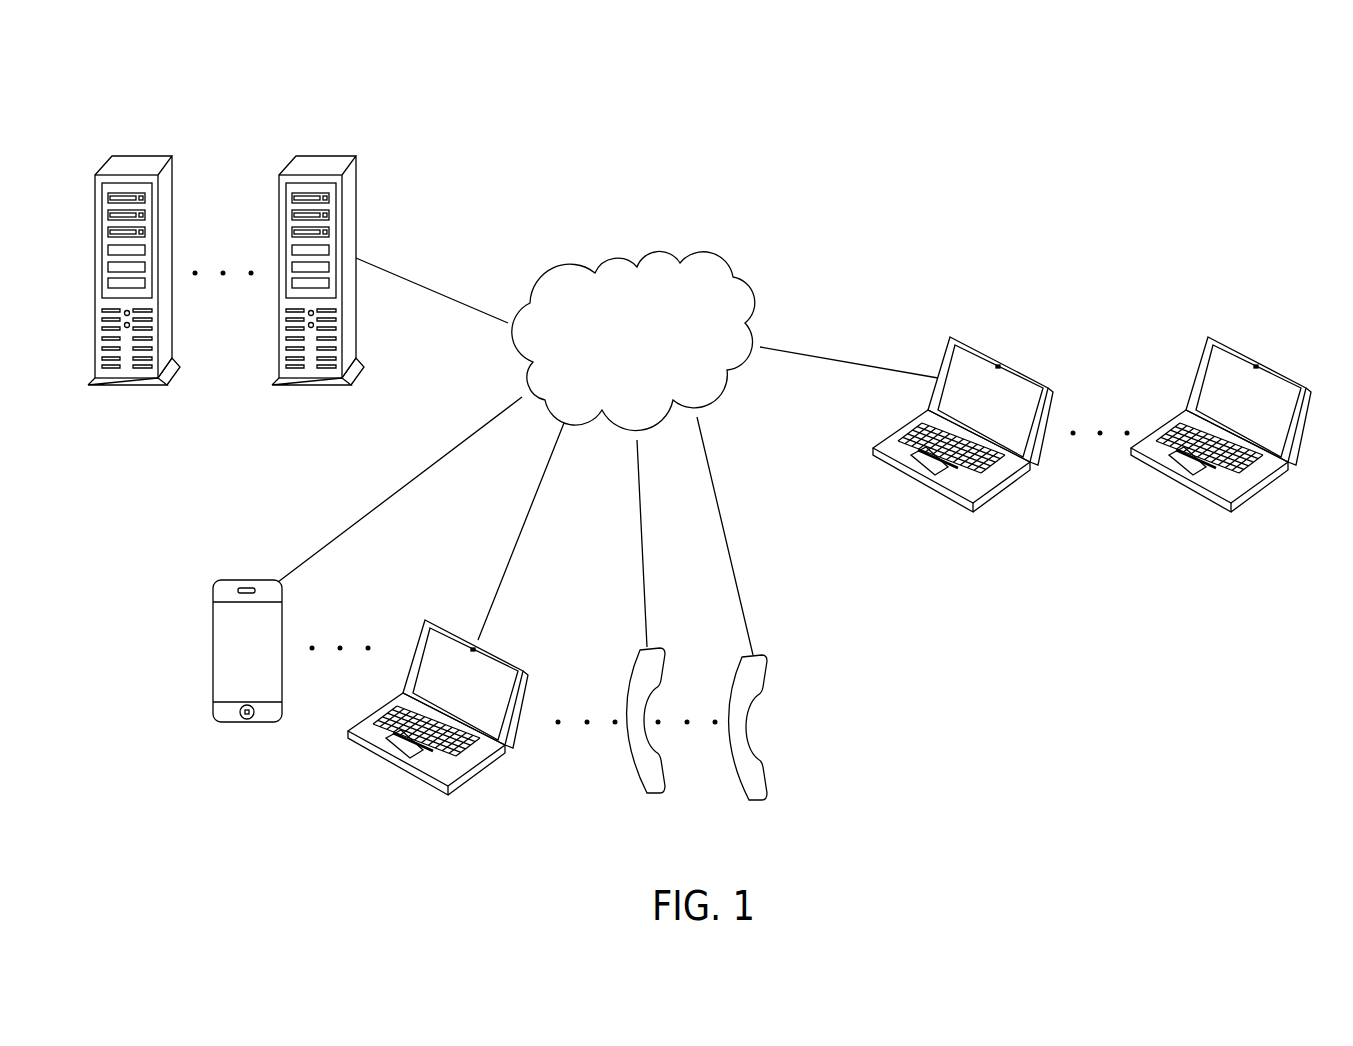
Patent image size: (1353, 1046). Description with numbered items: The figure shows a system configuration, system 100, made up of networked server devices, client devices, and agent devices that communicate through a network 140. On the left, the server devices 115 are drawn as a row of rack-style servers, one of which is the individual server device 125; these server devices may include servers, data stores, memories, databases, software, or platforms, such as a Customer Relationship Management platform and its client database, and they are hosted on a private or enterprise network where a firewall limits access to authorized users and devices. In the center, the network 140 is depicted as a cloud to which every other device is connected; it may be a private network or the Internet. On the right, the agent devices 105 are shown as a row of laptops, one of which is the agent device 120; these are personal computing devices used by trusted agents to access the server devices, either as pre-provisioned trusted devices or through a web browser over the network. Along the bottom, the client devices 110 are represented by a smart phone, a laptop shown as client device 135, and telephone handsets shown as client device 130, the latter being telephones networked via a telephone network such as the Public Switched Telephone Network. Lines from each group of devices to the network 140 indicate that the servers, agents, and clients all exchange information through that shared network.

The system 100 is at (1045, 167).
The agent devices 105 is at (1133, 357).
The client devices 110 is at (253, 765).
The server devices 115 is at (212, 407).
The agent device 120 is at (953, 503).
The server device 125 is at (123, 387).
The client device 130 is at (747, 725).
The client device 135 is at (437, 618).
The network 140 is at (707, 245).